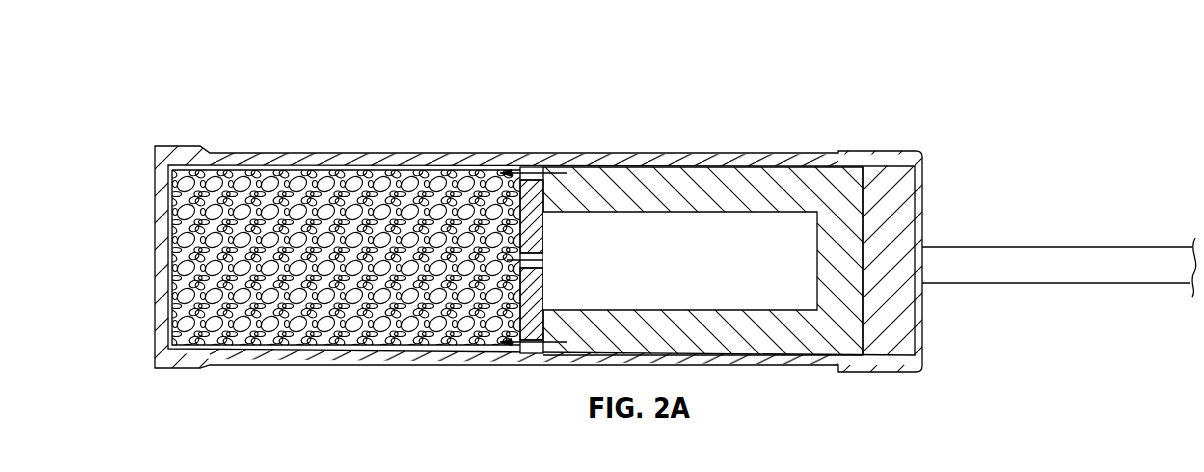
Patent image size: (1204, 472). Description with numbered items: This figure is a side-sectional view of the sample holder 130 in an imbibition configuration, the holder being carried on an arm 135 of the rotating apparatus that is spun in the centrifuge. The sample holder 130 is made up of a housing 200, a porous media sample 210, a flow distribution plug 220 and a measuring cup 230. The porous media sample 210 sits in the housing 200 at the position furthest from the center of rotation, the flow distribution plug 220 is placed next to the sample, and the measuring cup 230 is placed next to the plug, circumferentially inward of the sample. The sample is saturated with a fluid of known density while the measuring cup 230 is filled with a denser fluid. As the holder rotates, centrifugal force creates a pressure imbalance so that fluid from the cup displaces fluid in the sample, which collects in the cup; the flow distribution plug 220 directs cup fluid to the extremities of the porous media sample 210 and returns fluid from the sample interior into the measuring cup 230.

The sample holder 130 is at (240, 62).
The housing 200 is at (447, 153).
The porous media sample 210 is at (335, 190).
The flow distribution plug 220 is at (532, 185).
The measuring cup 230 is at (678, 175).
The arm 135 is at (1110, 247).